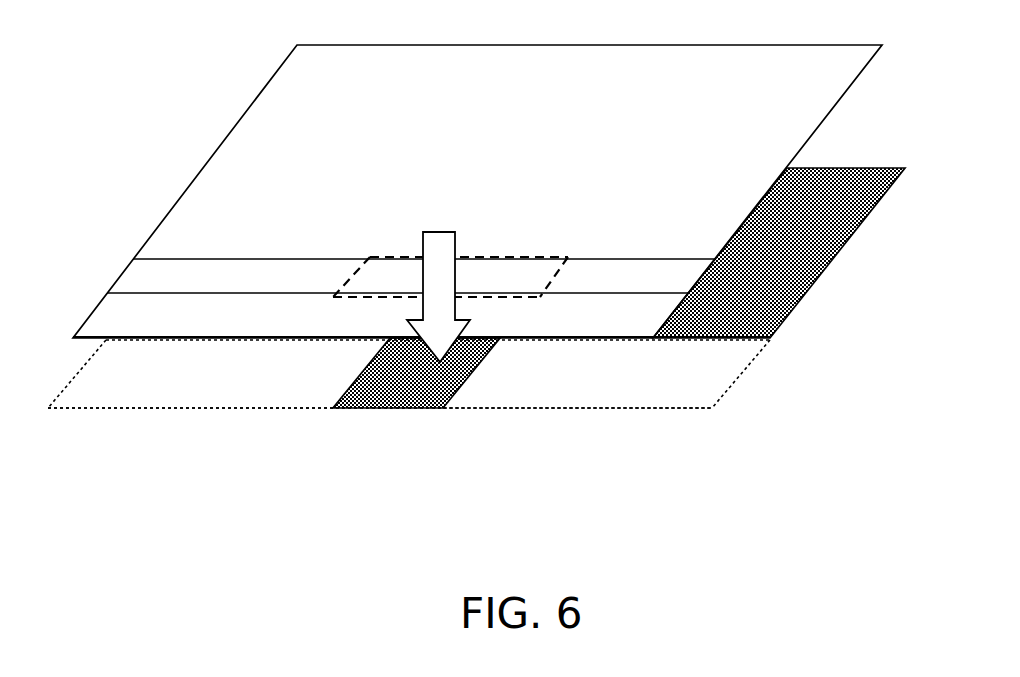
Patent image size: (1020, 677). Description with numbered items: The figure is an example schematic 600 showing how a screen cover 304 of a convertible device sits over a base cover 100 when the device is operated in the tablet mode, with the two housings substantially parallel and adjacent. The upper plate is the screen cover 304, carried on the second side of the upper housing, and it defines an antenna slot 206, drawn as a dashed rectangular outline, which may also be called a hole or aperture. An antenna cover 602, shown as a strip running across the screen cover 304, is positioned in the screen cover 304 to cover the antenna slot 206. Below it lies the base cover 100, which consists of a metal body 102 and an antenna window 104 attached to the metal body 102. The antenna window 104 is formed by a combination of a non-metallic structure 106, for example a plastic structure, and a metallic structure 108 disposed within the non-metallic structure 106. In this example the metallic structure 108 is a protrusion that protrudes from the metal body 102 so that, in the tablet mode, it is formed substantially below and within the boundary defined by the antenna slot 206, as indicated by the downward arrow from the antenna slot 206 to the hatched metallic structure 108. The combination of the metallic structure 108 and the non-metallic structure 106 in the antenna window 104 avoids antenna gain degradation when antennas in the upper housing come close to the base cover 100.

The base cover 100 is at (911, 168).
The metal body 102 is at (821, 275).
The antenna window 104 is at (785, 340).
The non-metallic structure 106 is at (178, 410).
The metallic structure 108 is at (396, 408).
The antenna slot 206 is at (377, 257).
The screen cover 304 is at (868, 62).
The schematic 600 is at (665, 536).
The antenna cover 602 is at (123, 273).